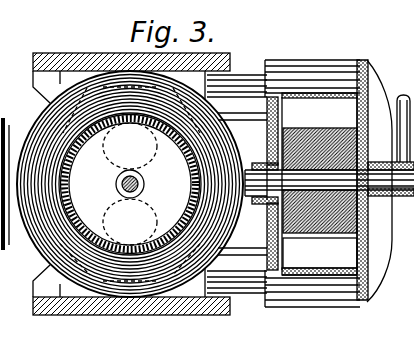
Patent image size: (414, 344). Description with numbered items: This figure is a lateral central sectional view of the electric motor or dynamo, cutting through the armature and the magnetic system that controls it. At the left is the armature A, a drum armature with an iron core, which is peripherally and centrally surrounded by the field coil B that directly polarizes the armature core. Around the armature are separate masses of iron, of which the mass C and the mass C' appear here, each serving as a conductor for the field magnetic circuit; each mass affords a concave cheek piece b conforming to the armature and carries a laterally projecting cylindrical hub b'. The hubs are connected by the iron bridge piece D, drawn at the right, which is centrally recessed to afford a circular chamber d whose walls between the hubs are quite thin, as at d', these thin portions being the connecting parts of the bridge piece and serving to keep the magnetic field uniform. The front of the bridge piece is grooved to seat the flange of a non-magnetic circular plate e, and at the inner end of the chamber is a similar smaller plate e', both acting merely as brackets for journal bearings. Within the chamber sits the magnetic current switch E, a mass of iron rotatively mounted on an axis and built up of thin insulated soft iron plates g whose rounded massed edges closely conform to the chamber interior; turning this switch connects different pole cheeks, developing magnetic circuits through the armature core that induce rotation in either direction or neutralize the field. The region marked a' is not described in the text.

The armature A is at (130, 184).
The field coil B is at (47, 121).
The iron mass C is at (39, 281).
The iron mass C' is at (33, 87).
The concave cheek piece b is at (131, 184).
The cylindrical hub b' is at (237, 184).
The bridge piece D is at (312, 174).
The circular chamber d is at (383, 180).
The thin wall portions d' is at (319, 107).
The magnetic current switch E is at (319, 232).
The non-magnetic circular plate e is at (379, 181).
The smaller plate e' is at (282, 131).
The soft iron plates g is at (353, 128).
The bottom flange a' is at (319, 286).